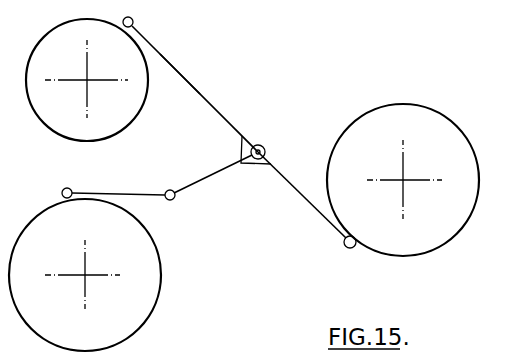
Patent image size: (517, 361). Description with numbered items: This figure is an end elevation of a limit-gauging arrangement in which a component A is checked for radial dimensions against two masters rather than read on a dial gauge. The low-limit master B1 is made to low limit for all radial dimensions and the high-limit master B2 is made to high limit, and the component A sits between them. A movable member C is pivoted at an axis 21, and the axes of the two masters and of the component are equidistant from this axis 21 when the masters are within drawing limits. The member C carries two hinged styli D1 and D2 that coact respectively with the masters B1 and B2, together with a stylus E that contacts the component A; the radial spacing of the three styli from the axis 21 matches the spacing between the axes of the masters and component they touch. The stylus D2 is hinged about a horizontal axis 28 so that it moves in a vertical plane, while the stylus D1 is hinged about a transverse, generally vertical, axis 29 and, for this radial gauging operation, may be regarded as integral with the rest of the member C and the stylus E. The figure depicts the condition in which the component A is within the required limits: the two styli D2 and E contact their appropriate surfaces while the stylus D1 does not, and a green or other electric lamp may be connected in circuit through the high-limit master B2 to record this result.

The component A is at (392, 113).
The low-limit master B1 is at (138, 116).
The high-limit master B2 is at (157, 300).
The movable member C is at (256, 162).
The stylus D1 is at (163, 55).
The stylus D2 is at (157, 193).
The stylus E is at (311, 205).
The pivot axis 21 is at (266, 146).
The horizontal axis 28 is at (176, 198).
The transverse axis 29 is at (187, 80).